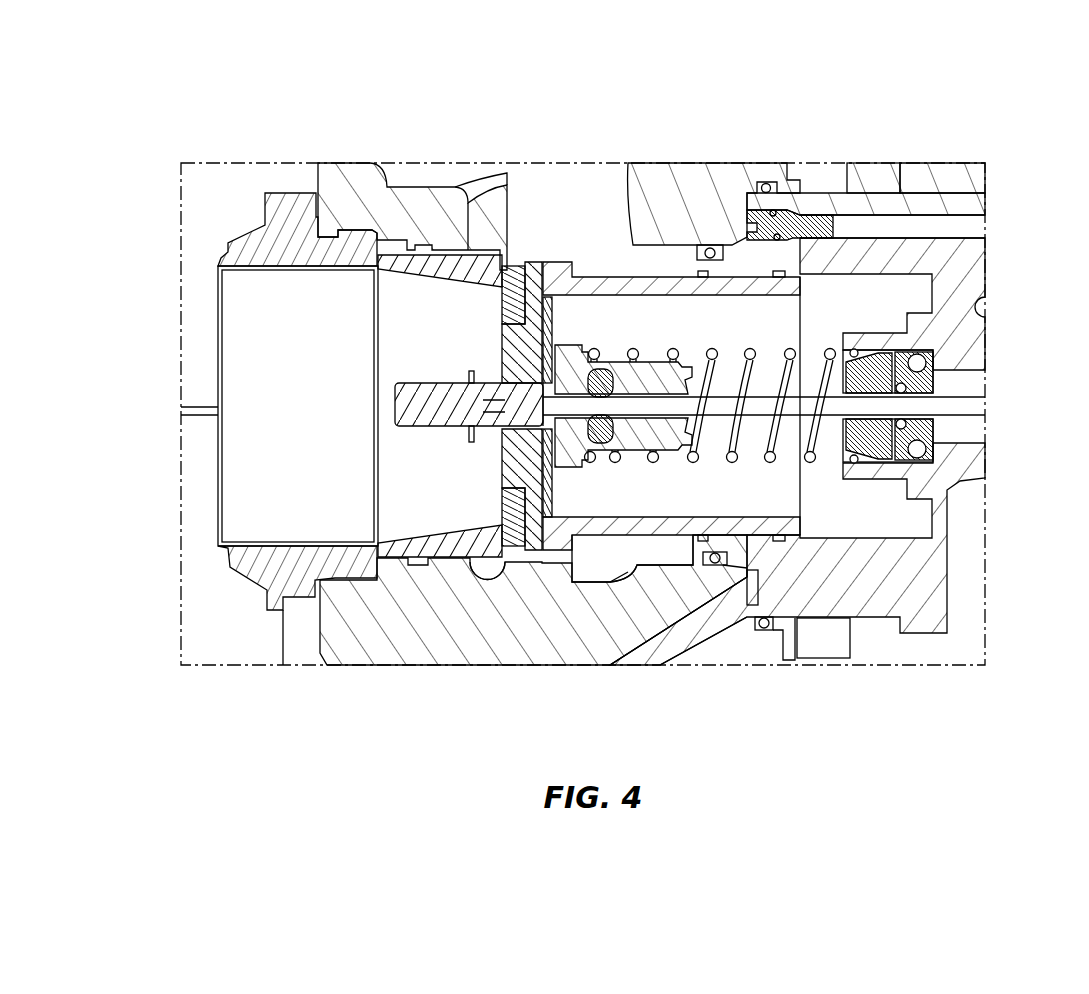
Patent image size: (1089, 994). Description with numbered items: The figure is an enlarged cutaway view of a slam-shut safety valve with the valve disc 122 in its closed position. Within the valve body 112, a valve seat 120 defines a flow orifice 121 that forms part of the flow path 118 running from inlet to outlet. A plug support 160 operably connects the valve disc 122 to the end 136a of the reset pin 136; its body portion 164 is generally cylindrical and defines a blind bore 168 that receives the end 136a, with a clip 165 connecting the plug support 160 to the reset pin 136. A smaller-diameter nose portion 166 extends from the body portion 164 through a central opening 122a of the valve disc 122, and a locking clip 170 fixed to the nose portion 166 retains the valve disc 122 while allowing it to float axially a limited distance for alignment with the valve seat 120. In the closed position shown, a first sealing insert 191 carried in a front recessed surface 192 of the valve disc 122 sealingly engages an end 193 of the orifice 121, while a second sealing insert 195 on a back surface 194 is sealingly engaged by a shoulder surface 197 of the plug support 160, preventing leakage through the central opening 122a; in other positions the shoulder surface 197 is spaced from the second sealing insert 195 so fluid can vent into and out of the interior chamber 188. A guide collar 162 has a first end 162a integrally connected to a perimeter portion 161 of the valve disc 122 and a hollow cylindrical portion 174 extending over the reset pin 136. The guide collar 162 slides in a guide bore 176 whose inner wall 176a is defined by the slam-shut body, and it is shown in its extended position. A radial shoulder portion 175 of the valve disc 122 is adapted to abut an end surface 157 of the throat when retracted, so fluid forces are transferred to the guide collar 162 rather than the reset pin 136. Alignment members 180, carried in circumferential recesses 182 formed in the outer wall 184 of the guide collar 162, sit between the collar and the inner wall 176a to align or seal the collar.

The valve body 112 is at (352, 178).
The flow path 118 is at (248, 372).
The valve seat 120 is at (437, 567).
The flow orifice 121 is at (410, 487).
The valve disc 122 is at (513, 413).
The central opening 122a is at (503, 398).
The reset pin 136 is at (970, 402).
The end of the reset pin 136a is at (575, 345).
The end surface of the throat portion 157 is at (660, 630).
The plug support 160 is at (568, 584).
The perimeter portion 161 is at (487, 265).
The guide collar 162 is at (738, 272).
The first end of the guide collar 162a is at (575, 278).
The body portion 164 is at (668, 352).
The clip 165 is at (601, 366).
The nose portion 166 is at (412, 392).
The blind bore 168 is at (650, 345).
The locking clip 170 is at (462, 442).
The hollow cylindrical portion 174 is at (838, 232).
The radial shoulder portion 175 is at (665, 568).
The guide bore 176 is at (880, 533).
The inner wall of the guide bore 176a is at (775, 225).
The alignment members 180 is at (712, 243).
The circumferential recesses 182 is at (715, 566).
The outer wall of the guide collar 184 is at (767, 632).
The interior chamber 188 is at (745, 495).
The first sealing insert 191 is at (528, 508).
The front recessed surface 192 is at (542, 565).
The end of the orifice 193 is at (505, 553).
The back surface 194 is at (498, 280).
The second sealing insert 195 is at (628, 576).
The shoulder surface 197 is at (580, 458).